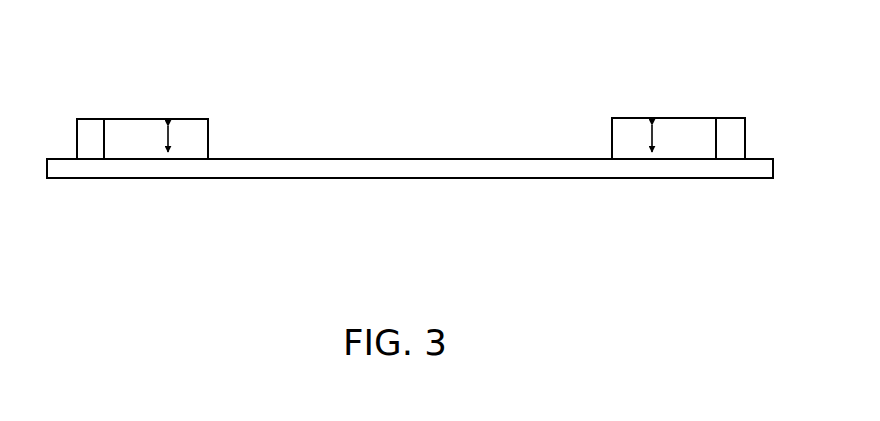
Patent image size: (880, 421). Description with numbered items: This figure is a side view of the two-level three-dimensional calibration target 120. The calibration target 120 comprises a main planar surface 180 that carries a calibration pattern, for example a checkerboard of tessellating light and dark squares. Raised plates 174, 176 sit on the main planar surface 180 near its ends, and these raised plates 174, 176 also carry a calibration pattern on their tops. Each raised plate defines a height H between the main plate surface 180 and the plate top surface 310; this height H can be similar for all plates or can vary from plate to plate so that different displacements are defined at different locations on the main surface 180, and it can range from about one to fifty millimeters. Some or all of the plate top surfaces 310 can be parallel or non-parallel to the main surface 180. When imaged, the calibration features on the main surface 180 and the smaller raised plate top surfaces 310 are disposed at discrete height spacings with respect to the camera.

The calibration target 120 is at (476, 166).
The main planar surface 180 is at (330, 156).
The raised plate 174 is at (128, 132).
The raised plate 176 is at (697, 132).
The plate top surface 310 is at (189, 115).
The height H is at (173, 140).